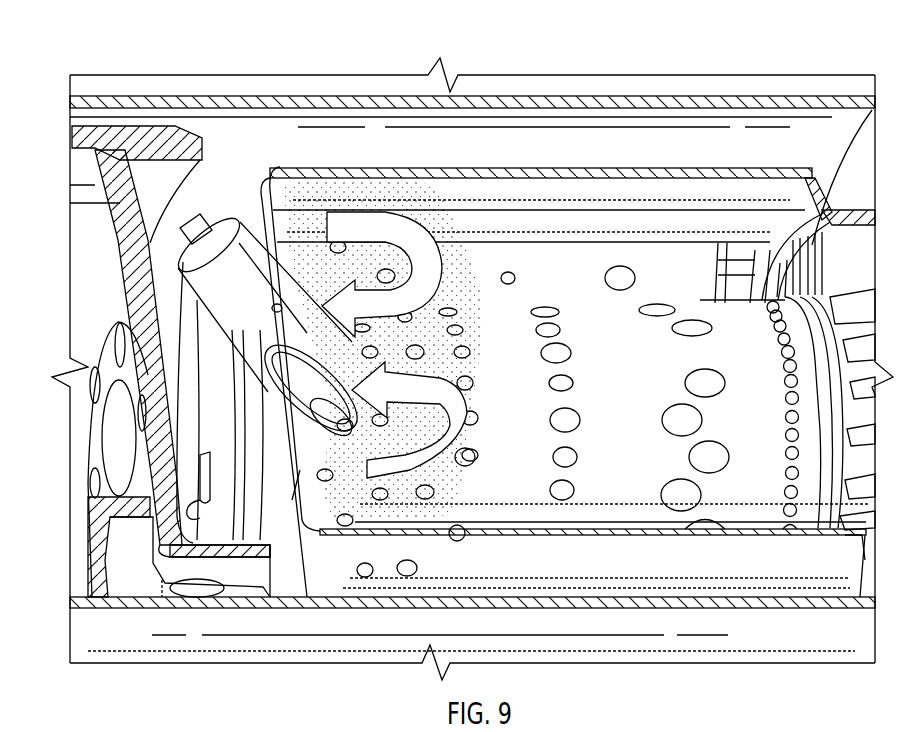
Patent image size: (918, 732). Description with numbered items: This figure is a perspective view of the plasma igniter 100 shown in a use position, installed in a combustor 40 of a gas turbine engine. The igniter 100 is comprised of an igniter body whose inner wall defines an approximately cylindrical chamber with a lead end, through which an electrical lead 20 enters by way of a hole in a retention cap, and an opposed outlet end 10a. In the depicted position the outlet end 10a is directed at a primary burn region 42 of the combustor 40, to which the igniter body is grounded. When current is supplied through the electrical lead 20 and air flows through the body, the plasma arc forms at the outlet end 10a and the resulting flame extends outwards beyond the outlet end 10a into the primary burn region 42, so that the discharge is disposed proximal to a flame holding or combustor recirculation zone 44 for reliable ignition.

The outlet end 10a is at (300, 470).
The electrical lead 20 is at (176, 226).
The combustor 40 is at (472, 353).
The primary burn region 42 is at (415, 197).
The combustor recirculation zone 44 is at (489, 272).
The plasma igniter 100 is at (188, 327).